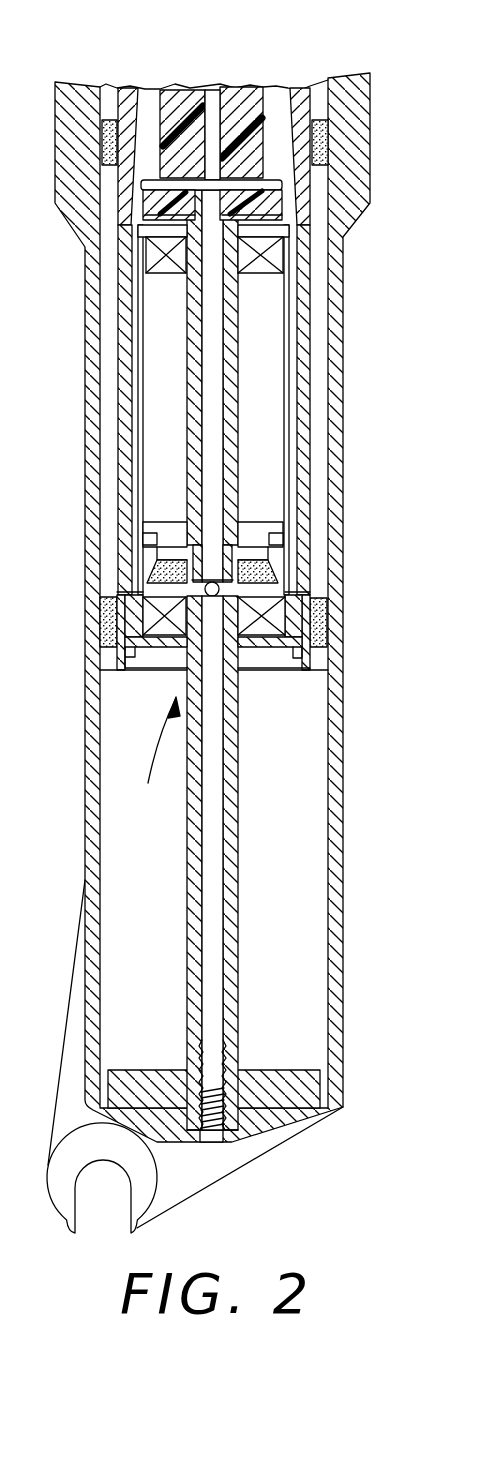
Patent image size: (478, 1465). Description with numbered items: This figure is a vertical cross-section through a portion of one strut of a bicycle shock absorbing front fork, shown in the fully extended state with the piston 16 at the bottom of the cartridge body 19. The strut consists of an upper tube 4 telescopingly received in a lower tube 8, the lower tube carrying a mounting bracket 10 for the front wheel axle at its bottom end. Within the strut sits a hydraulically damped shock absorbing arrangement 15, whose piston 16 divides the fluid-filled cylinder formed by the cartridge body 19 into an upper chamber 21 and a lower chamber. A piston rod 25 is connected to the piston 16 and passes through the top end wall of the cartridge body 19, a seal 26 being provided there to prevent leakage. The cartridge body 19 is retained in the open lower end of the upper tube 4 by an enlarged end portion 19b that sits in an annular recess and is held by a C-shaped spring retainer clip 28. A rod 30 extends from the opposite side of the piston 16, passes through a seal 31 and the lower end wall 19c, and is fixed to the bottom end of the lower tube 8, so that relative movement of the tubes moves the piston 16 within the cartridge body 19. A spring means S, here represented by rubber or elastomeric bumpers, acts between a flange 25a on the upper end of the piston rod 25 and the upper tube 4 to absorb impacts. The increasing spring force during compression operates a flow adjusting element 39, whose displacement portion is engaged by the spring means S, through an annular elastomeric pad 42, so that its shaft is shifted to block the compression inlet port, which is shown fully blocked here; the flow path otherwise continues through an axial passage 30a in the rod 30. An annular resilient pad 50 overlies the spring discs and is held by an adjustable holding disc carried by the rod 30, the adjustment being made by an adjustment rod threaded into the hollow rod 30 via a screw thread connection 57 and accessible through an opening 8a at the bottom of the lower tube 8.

The spring means S is at (237, 82).
The upper tube 4 is at (300, 80).
The lower tube 8 is at (343, 378).
The opening 8a is at (218, 1142).
The mounting bracket 10 is at (150, 1177).
The hydraulically damped shock absorbing arrangement 15 is at (155, 758).
The piston 16 is at (264, 524).
The cartridge body 19 is at (276, 388).
The enlarged end portion 19b is at (300, 619).
The lower end wall 19c is at (157, 652).
The upper chamber 21 is at (180, 426).
The piston rod 25 is at (228, 432).
The flange 25a is at (297, 222).
The seal 26 is at (165, 275).
The spring retainer clip 28 is at (293, 657).
The rod 30 is at (236, 892).
The axial passage 30a is at (210, 818).
The seal 31 is at (260, 633).
The flow adjusting element 39 is at (287, 183).
The annular elastomeric pad 42 is at (143, 197).
The annular resilient pad 50 is at (267, 572).
The screw thread connection 57 is at (205, 1085).